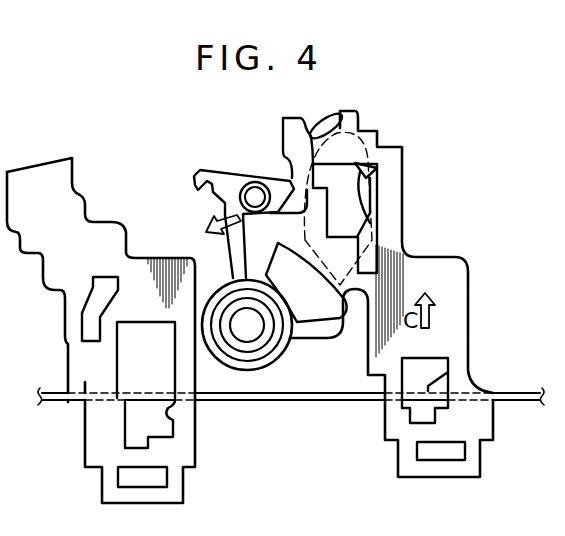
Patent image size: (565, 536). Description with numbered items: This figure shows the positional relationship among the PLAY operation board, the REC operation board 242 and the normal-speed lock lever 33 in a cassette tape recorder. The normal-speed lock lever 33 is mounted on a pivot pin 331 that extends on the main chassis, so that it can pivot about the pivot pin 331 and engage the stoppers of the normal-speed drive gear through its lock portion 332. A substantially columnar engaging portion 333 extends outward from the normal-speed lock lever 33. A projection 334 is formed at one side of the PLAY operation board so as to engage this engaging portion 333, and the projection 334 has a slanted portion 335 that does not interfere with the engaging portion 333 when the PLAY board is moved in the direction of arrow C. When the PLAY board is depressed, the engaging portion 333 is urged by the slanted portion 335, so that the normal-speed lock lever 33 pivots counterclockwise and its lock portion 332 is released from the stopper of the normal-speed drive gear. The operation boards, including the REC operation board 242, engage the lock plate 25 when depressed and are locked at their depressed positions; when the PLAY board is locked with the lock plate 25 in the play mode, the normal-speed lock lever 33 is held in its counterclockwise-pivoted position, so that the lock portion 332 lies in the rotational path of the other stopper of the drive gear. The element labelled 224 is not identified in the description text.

The lock plate 25 is at (237, 402).
The normal-speed lock lever 33 is at (232, 257).
The pivot pin 331 is at (262, 332).
The lock portion 332 is at (358, 182).
The engaging portion 333 is at (245, 183).
The projection 334 is at (223, 210).
The slanted portion 335 is at (280, 180).
The right frame bracket 224 is at (483, 460).
The REC operation board 242 is at (185, 481).